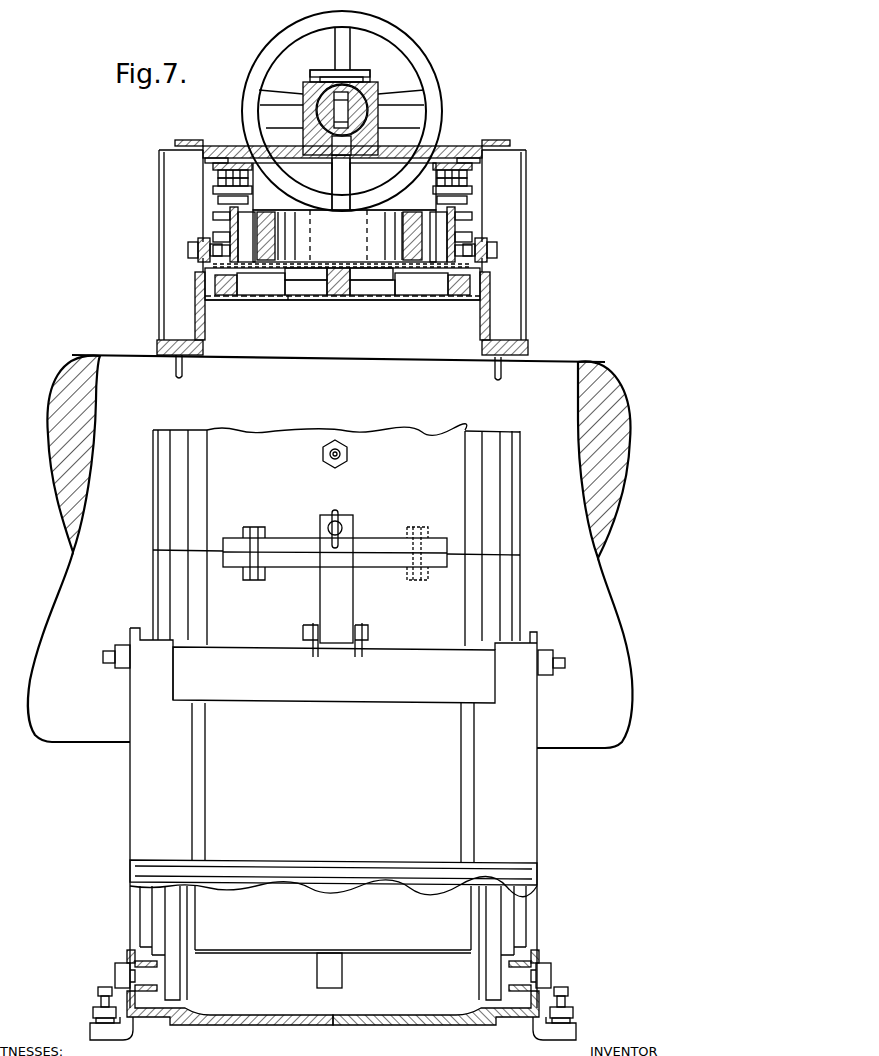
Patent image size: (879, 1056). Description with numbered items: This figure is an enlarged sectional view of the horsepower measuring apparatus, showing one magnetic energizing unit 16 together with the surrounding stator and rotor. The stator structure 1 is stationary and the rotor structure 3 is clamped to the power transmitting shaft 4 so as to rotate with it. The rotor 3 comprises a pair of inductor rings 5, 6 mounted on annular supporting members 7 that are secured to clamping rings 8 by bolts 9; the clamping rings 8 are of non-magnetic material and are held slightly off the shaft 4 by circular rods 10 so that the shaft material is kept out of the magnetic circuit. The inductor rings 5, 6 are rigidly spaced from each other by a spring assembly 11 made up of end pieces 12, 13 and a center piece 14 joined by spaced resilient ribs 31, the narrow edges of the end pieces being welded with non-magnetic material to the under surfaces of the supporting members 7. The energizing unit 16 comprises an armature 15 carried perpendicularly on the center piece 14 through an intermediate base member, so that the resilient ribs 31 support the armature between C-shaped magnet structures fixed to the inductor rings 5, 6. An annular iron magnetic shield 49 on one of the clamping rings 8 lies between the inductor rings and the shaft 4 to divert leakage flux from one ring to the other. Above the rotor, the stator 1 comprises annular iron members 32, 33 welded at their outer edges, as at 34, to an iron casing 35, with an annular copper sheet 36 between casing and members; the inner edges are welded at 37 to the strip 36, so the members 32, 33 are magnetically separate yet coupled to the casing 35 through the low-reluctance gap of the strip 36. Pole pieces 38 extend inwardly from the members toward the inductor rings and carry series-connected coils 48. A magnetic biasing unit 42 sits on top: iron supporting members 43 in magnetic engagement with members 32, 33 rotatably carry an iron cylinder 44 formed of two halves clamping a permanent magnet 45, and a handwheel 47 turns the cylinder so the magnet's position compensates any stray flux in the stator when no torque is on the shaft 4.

The stator structure 1 is at (527, 160).
The rotor structure 3 is at (503, 300).
The shaft 4 is at (75, 580).
The inductor ring 5 is at (242, 216).
The inductor ring 6 is at (430, 201).
The annular supporting member 7 is at (262, 282).
The clamping ring 8 is at (195, 312).
The bolt 9 is at (189, 249).
The circular rod 10 is at (183, 370).
The spring assembly 11 is at (342, 326).
The end piece 12 is at (222, 292).
The end piece 13 is at (446, 293).
The center piece 14 is at (344, 295).
The armature 15 is at (318, 210).
The magnetic energizing unit 16 is at (343, 241).
The resilient rib 31 is at (316, 287).
The annular iron member 32 is at (290, 162).
The annular iron member 33 is at (412, 162).
The weld 34 is at (203, 155).
The iron casing 35 is at (219, 142).
The annular sheet of non-magnetic material 36 is at (248, 147).
The weld 37 is at (341, 162).
The pole piece 38 is at (213, 186).
The magnetic biasing unit 42 is at (406, 95).
The iron supporting member 43 is at (306, 134).
The iron cylinder 44 is at (359, 77).
The permanent magnet 45 is at (318, 106).
The handwheel 47 is at (426, 66).
The coil 48 is at (216, 168).
The annular iron magnetic shield 49 is at (288, 296).